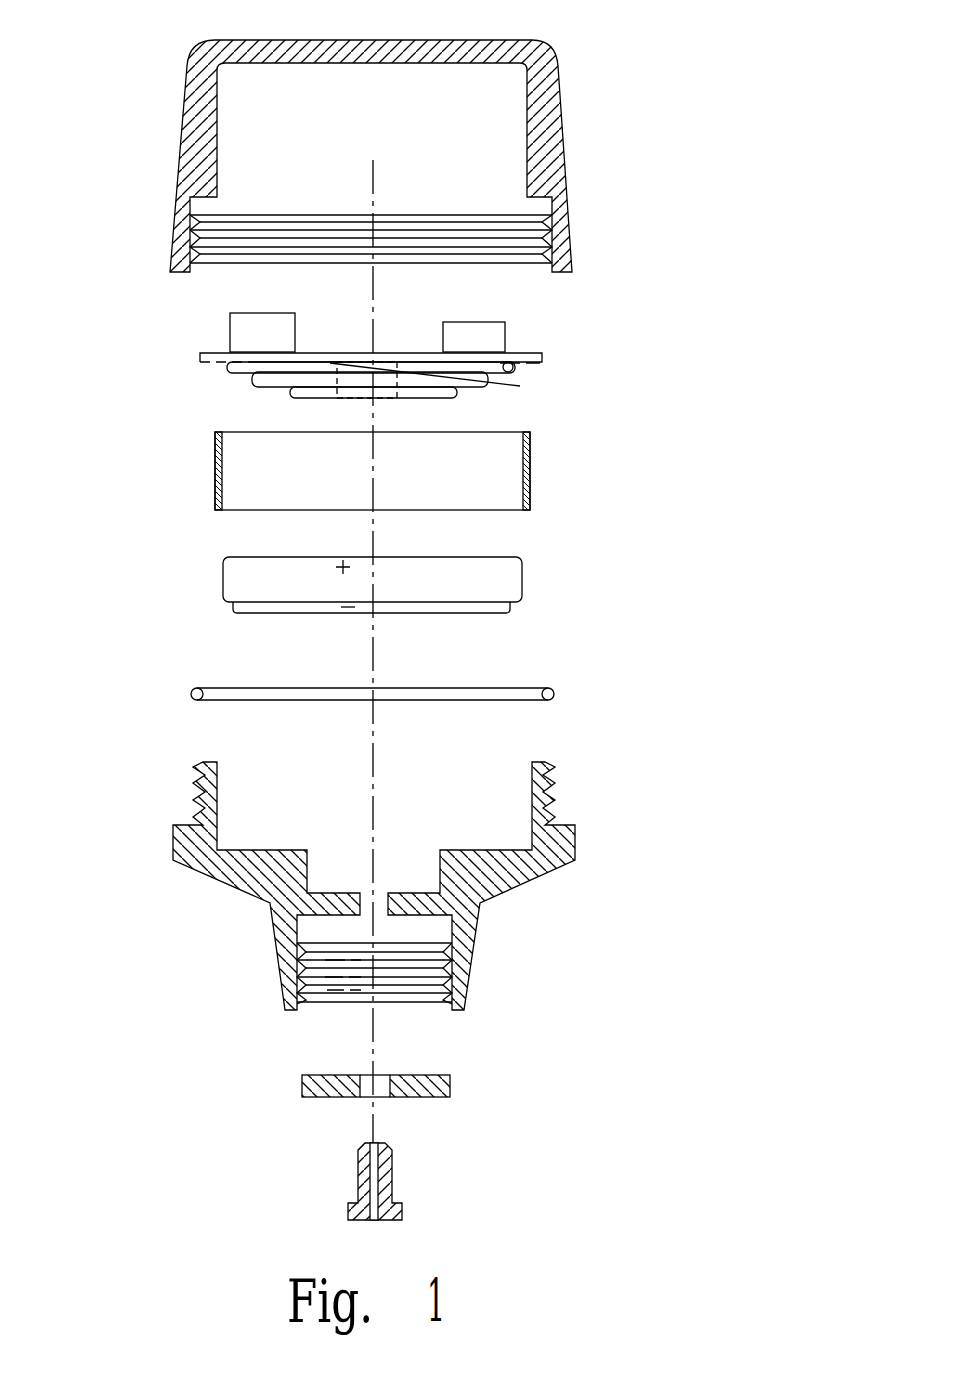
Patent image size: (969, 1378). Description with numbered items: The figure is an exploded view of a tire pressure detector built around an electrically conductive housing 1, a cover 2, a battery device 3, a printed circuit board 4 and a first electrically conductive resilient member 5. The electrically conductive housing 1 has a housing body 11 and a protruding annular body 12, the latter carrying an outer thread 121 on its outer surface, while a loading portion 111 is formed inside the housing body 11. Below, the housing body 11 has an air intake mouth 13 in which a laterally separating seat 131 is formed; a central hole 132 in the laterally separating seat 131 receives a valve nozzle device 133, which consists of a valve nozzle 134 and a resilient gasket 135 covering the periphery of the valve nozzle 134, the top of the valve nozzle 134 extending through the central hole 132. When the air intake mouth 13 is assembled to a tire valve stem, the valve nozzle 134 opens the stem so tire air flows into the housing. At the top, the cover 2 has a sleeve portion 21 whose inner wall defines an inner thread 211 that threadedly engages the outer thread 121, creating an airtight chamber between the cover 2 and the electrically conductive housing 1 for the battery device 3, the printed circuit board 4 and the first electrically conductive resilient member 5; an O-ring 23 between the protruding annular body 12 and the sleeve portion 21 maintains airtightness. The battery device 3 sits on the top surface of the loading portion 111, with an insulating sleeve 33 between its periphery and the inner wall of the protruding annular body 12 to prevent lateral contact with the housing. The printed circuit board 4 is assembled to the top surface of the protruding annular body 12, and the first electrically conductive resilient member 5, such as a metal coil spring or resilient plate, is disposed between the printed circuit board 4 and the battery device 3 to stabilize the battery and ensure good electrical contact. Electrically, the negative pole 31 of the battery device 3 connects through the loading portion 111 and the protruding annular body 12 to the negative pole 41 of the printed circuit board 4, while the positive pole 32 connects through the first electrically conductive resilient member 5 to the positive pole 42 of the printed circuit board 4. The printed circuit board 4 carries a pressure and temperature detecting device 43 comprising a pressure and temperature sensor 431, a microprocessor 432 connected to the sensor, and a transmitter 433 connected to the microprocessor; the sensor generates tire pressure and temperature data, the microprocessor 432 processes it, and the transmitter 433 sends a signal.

The electrically conductive housing 1 is at (402, 967).
The housing body 11 is at (423, 862).
The loading portion 111 is at (530, 878).
The protruding annular body 12 is at (545, 762).
The outer thread 121 is at (552, 800).
The air intake mouth 13 is at (462, 947).
The laterally separating seat 131 is at (328, 907).
The central hole 132 is at (363, 882).
The valve nozzle device 133 is at (433, 1165).
The valve nozzle 134 is at (390, 1155).
The resilient gasket 135 is at (450, 1085).
The cover 2 is at (430, 147).
The sleeve portion 21 is at (545, 128).
The inner thread 211 is at (550, 235).
The O-ring 23 is at (553, 694).
The battery device 3 is at (435, 584).
The negative pole 31 is at (418, 612).
The positive pole 32 is at (463, 557).
The insulating sleeve 33 is at (530, 470).
The printed circuit board 4 is at (371, 346).
The negative pole 41 is at (210, 365).
The positive pole 42 is at (235, 358).
The pressure and temperature detecting device 43 is at (380, 342).
The pressure and temperature sensor 431 is at (437, 392).
The microprocessor 432 is at (257, 314).
The transmitter 433 is at (467, 332).
The first electrically conductive resilient member 5 is at (490, 378).